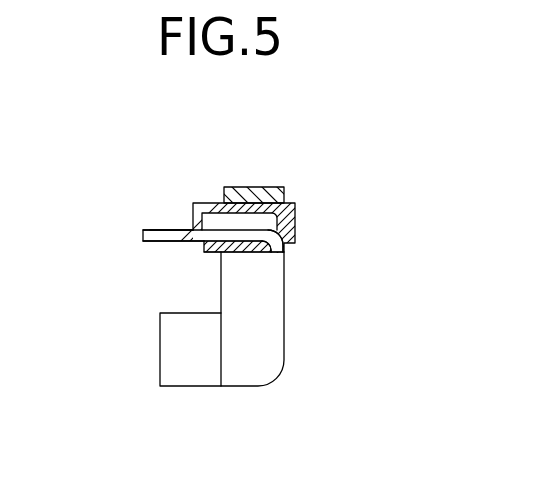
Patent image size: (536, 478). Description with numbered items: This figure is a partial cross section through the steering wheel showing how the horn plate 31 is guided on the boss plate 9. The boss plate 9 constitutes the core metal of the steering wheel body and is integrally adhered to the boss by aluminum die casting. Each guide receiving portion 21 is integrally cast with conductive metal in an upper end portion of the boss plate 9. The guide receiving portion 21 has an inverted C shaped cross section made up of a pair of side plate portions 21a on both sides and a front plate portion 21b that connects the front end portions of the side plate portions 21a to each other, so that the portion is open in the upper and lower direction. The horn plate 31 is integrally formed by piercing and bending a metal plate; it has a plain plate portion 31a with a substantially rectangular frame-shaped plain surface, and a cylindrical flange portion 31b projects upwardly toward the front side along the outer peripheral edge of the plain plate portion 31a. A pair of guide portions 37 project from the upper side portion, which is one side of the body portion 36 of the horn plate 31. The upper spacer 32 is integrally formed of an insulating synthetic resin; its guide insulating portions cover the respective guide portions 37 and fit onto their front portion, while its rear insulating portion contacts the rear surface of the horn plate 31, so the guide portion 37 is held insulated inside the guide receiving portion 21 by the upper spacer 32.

The boss plate 9 is at (173, 350).
The guide receiving portion 21 is at (289, 250).
The side plate portion 21a is at (277, 316).
The front plate portion 21b is at (247, 187).
The horn plate 31 is at (241, 240).
The plain plate portion 31a is at (166, 242).
The flange portion 31b is at (283, 225).
The upper spacer 32 is at (255, 210).
The body portion 36 is at (167, 230).
The guide portion 37 is at (262, 251).